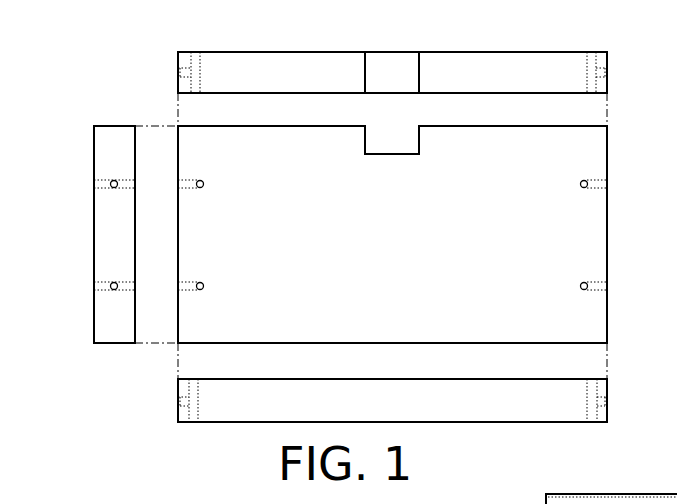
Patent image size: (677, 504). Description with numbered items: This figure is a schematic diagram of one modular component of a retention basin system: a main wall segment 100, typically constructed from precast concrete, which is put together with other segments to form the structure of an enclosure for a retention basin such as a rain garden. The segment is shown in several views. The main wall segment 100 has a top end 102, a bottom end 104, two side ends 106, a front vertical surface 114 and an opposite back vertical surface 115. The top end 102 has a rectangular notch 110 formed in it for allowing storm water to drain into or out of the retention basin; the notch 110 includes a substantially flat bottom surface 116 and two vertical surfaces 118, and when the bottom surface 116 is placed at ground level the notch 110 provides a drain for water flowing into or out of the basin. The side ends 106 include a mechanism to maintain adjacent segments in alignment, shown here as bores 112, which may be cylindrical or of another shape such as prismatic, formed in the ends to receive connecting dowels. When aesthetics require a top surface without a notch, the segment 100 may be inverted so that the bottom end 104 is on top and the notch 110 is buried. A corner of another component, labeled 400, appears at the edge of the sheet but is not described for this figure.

The main wall segment 100 is at (284, 46).
The top end 102 is at (486, 55).
The bottom end 104 is at (480, 385).
The side ends 106 is at (117, 222).
The rectangular notch 110 is at (390, 53).
The bores 112 is at (177, 74).
The front vertical surface 114 is at (402, 255).
The back vertical surface 115 is at (490, 424).
The bottom surface 116 is at (385, 152).
The vertical surfaces 118 is at (421, 130).
The housing (partial view of next figure) 400 is at (676, 482).